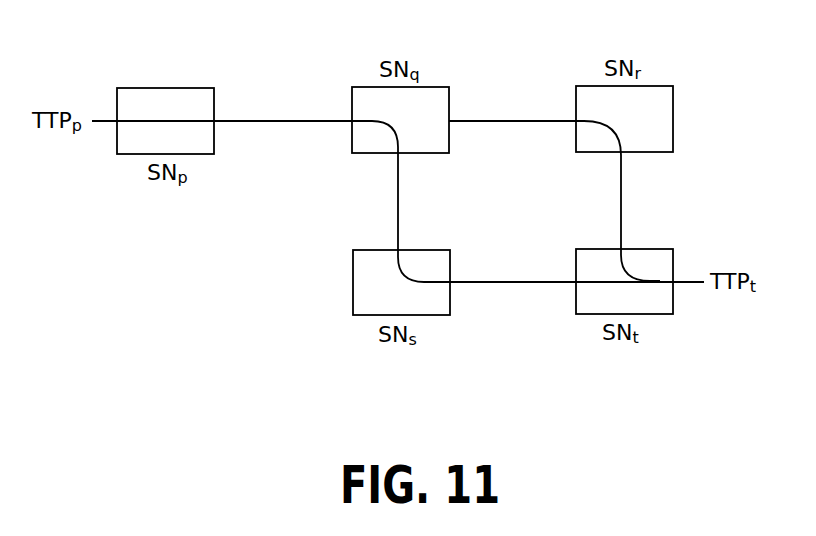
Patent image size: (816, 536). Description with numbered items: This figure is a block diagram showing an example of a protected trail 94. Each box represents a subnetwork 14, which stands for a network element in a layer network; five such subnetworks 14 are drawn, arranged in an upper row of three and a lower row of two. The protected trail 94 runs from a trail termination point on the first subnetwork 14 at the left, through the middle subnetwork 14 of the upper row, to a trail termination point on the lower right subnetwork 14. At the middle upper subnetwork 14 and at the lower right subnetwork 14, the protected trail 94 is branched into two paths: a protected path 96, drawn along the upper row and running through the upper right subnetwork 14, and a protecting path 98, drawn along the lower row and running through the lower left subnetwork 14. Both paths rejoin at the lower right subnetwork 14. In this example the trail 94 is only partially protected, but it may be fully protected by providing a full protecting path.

The subnetwork 14 is at (196, 88).
The protected trail 94 is at (291, 94).
The protected path 96 is at (507, 121).
The protecting path 98 is at (517, 283).